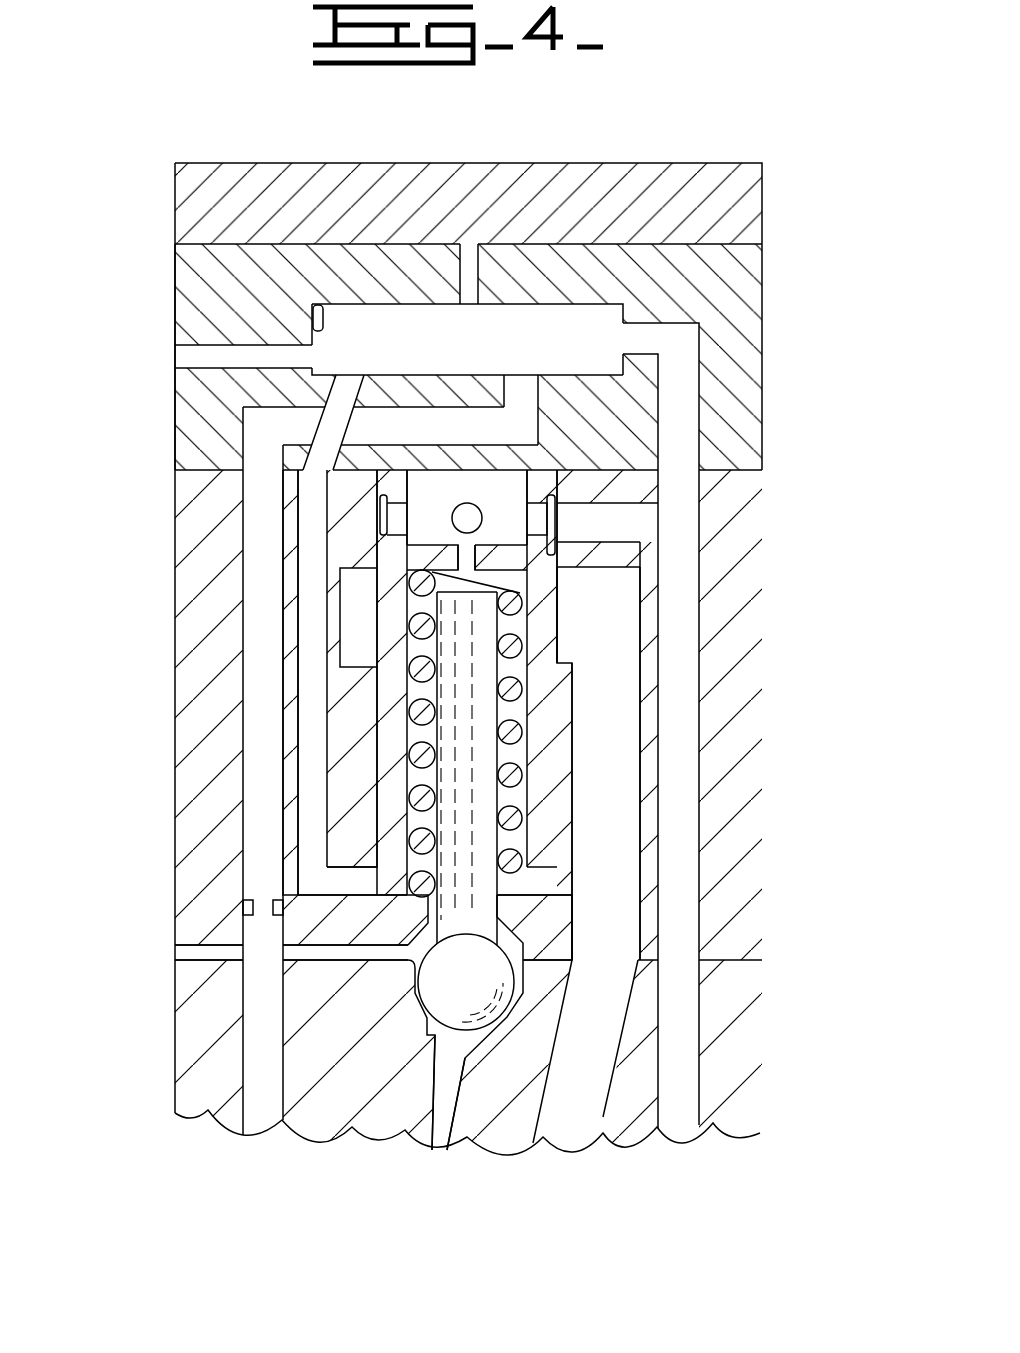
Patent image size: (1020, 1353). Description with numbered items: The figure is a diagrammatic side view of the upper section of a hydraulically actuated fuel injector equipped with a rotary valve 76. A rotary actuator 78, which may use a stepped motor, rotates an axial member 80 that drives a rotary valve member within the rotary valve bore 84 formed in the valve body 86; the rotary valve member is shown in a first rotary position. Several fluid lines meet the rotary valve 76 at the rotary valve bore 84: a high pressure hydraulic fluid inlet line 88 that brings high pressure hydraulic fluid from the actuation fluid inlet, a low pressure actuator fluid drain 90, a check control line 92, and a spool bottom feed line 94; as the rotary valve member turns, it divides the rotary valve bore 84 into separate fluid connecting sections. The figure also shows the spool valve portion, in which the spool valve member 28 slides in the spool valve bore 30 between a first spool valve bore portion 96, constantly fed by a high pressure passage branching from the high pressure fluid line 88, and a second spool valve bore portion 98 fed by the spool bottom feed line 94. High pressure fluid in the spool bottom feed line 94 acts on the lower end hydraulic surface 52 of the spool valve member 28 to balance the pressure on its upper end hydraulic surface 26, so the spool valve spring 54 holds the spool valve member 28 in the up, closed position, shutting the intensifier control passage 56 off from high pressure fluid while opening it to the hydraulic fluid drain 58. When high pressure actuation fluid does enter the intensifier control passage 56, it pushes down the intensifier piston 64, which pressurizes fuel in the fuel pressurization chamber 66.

The upper end hydraulic surface 26 is at (503, 545).
The spool valve member 28 is at (545, 618).
The spool valve bore 30 is at (387, 810).
The lower end hydraulic surface 52 is at (392, 877).
The spool valve spring 54 is at (513, 783).
The intensifier control passage 56 is at (602, 810).
The hydraulic fluid drain 58 is at (382, 692).
The intensifier piston 64 is at (447, 977).
The fuel pressurization chamber 66 is at (437, 1112).
The rotary valve 76 is at (338, 307).
The rotary actuator 78 is at (703, 180).
The axial member 80 is at (479, 265).
The rotary valve bore 84 is at (322, 307).
The valve body 86 is at (762, 440).
The high pressure hydraulic fluid inlet line 88 is at (680, 727).
The low pressure actuator fluid drain 90 is at (176, 355).
The check control line 92 is at (255, 622).
The spool bottom feed line 94 is at (310, 767).
The first spool valve bore portion 96 is at (380, 550).
The second spool valve bore portion 98 is at (558, 893).